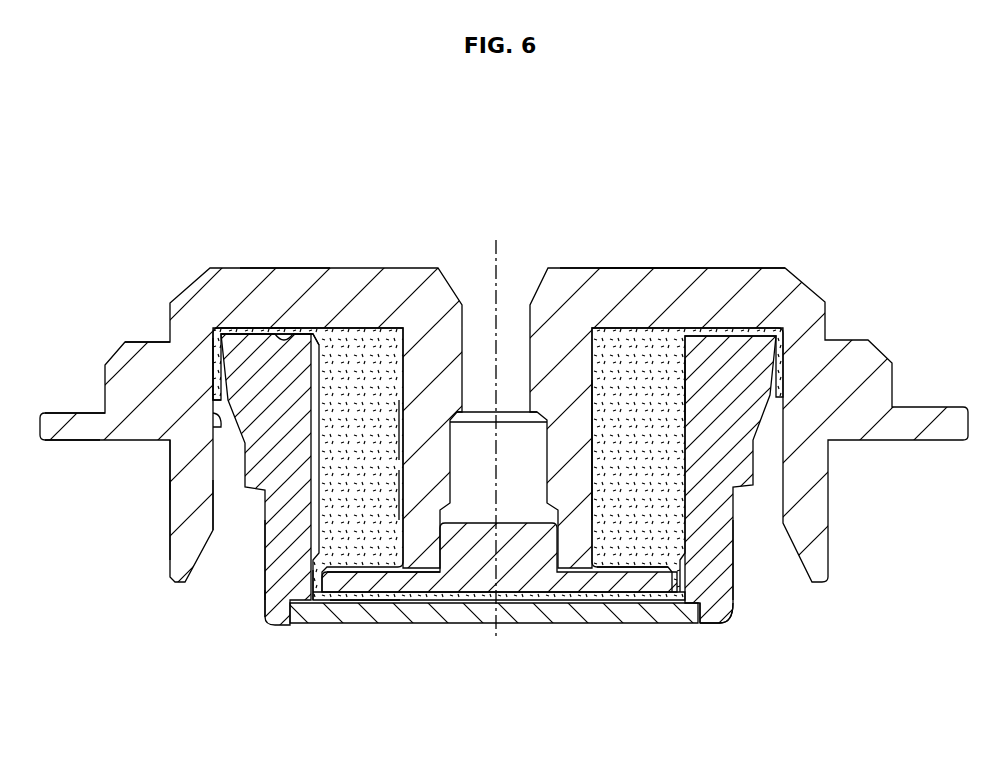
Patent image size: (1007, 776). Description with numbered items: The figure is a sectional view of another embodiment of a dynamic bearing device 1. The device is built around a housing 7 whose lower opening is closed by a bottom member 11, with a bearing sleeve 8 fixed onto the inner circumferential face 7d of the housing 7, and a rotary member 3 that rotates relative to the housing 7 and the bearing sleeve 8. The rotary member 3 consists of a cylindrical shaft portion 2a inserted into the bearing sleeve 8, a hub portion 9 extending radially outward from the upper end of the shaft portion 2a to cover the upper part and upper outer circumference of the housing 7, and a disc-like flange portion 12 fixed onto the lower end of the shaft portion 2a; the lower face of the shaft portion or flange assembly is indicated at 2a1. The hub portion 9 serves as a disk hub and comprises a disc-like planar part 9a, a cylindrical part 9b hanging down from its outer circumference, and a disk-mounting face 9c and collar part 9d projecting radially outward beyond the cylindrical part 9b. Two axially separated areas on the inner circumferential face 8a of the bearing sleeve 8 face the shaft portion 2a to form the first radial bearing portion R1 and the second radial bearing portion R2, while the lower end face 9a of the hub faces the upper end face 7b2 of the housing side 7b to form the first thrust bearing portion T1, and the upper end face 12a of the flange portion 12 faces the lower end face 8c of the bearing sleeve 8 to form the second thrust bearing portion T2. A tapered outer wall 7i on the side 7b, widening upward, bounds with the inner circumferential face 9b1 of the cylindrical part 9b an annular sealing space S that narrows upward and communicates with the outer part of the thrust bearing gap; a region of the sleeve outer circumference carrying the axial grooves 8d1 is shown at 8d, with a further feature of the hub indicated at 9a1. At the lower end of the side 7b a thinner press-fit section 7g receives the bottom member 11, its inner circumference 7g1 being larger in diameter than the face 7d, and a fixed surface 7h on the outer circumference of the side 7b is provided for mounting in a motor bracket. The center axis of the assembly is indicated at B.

The dynamic bearing device 1 is at (614, 188).
The shaft portion 2a is at (584, 421).
The sensor body bottom surface 2a1 is at (625, 548).
The rotary member 3 is at (291, 262).
The housing 7 is at (533, 630).
The side 7b is at (273, 553).
The upper end face of the side 7b2 is at (240, 322).
The inner circumferential face 7d is at (684, 407).
The press-fit section 7g is at (737, 610).
The inner circumference of the press-fit section 7g1 is at (697, 617).
The fixed surface 7h is at (739, 565).
The tapered outer wall 7i is at (211, 448).
The bearing sleeve 8 is at (667, 519).
The inner circumferential face of the bearing sleeve 8a is at (585, 480).
The lower end face of the bearing sleeve 8c is at (347, 575).
The seal outer portion 8d is at (207, 527).
The axial grooves 8d1 is at (263, 623).
The hub portion 9 is at (723, 265).
The planar part 9a is at (647, 295).
The housing recess 9a1 is at (301, 326).
The cylindrical part 9b is at (185, 493).
The inner circumferential face of the cylindrical part 9b1 is at (170, 448).
The disk-mounting face 9c is at (146, 340).
The collar part 9d is at (60, 422).
The bottom member 11 is at (470, 617).
The flange portion 12 is at (597, 583).
The upper end face of the flange portion 12a is at (376, 568).
The center axis B is at (430, 228).
The sealing space S is at (209, 382).
The first thrust bearing portion T1 is at (258, 322).
The second thrust bearing portion T2 is at (361, 580).
The first radial bearing portion R1 is at (380, 411).
The second radial bearing portion R2 is at (375, 512).